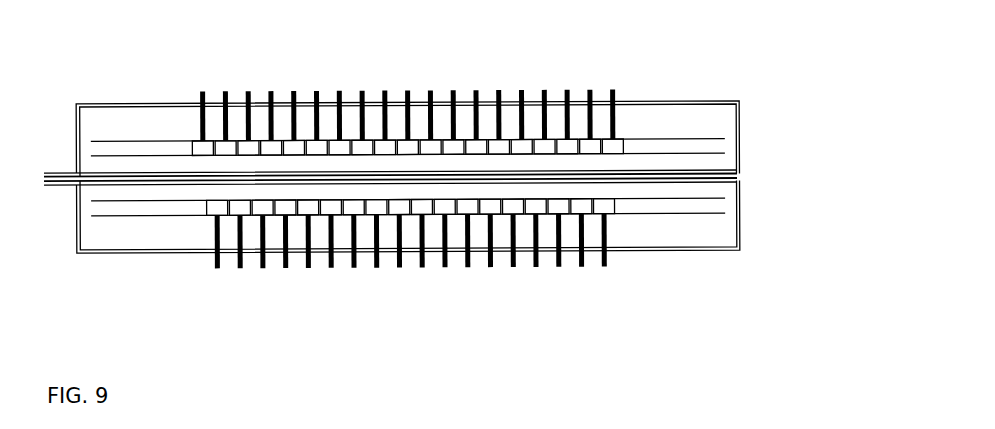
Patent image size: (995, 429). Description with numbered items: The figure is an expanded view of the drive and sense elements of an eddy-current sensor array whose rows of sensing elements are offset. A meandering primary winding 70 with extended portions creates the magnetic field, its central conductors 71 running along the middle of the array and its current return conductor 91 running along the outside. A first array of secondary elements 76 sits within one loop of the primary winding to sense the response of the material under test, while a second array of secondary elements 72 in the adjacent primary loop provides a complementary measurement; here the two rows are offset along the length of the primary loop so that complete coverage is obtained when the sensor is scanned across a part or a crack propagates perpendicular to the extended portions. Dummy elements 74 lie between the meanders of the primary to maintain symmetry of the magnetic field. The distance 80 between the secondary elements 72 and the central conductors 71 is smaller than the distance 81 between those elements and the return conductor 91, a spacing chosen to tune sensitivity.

The primary winding 70 is at (507, 250).
The central conductors 71 is at (740, 177).
The secondary elements 72 is at (610, 217).
The dummy elements 74 is at (642, 138).
The secondary elements 76 is at (575, 140).
The distance 80 is at (722, 190).
The distance 81 is at (722, 228).
The current return conductor 91 is at (155, 250).